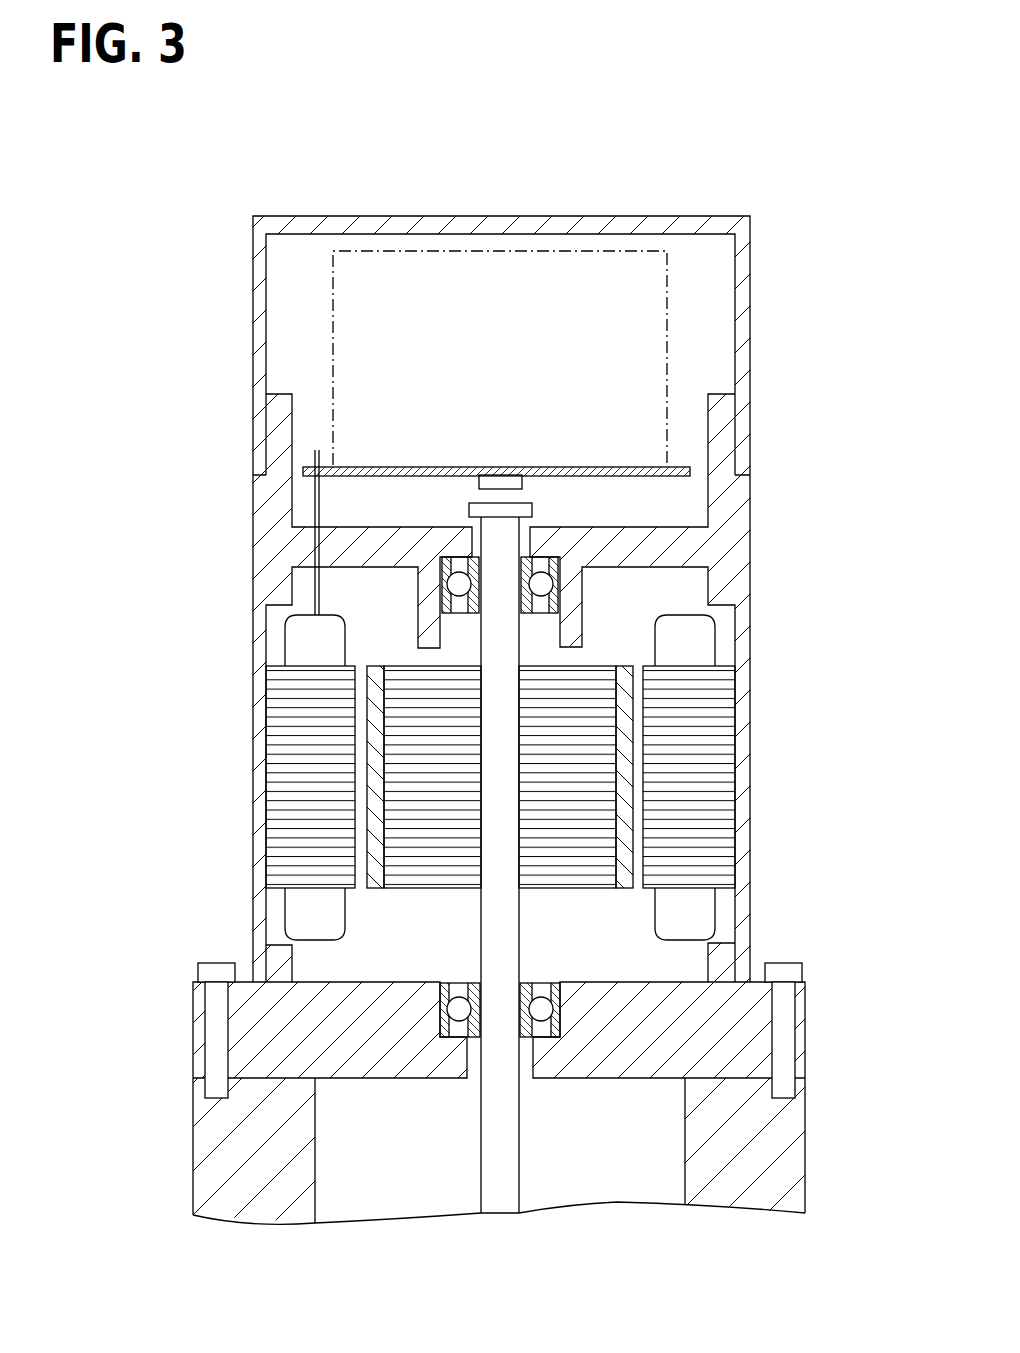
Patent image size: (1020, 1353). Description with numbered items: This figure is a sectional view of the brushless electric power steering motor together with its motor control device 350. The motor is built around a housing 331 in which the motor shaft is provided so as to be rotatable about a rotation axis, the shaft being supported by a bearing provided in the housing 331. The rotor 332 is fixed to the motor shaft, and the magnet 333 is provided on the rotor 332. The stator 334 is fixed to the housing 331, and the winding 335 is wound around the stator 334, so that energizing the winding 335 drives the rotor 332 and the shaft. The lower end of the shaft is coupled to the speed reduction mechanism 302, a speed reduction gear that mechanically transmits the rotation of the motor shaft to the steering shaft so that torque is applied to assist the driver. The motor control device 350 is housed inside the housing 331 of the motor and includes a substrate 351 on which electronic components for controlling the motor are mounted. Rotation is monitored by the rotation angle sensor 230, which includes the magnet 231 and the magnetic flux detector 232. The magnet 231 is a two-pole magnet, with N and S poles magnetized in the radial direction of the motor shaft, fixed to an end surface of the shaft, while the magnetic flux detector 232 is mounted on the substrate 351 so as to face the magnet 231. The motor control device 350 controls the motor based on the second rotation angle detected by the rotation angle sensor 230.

The rotation angle sensor 230 is at (479, 483).
The magnet 231 is at (532, 510).
The magnetic flux detector 232 is at (522, 482).
The speed reduction mechanism 302 is at (519, 1178).
The housing 331 is at (268, 552).
The rotor 332 is at (577, 890).
The magnet 333 is at (376, 888).
The stator 334 is at (710, 758).
The winding 335 is at (715, 647).
The motor control device 350 is at (667, 320).
The substrate 351 is at (680, 466).